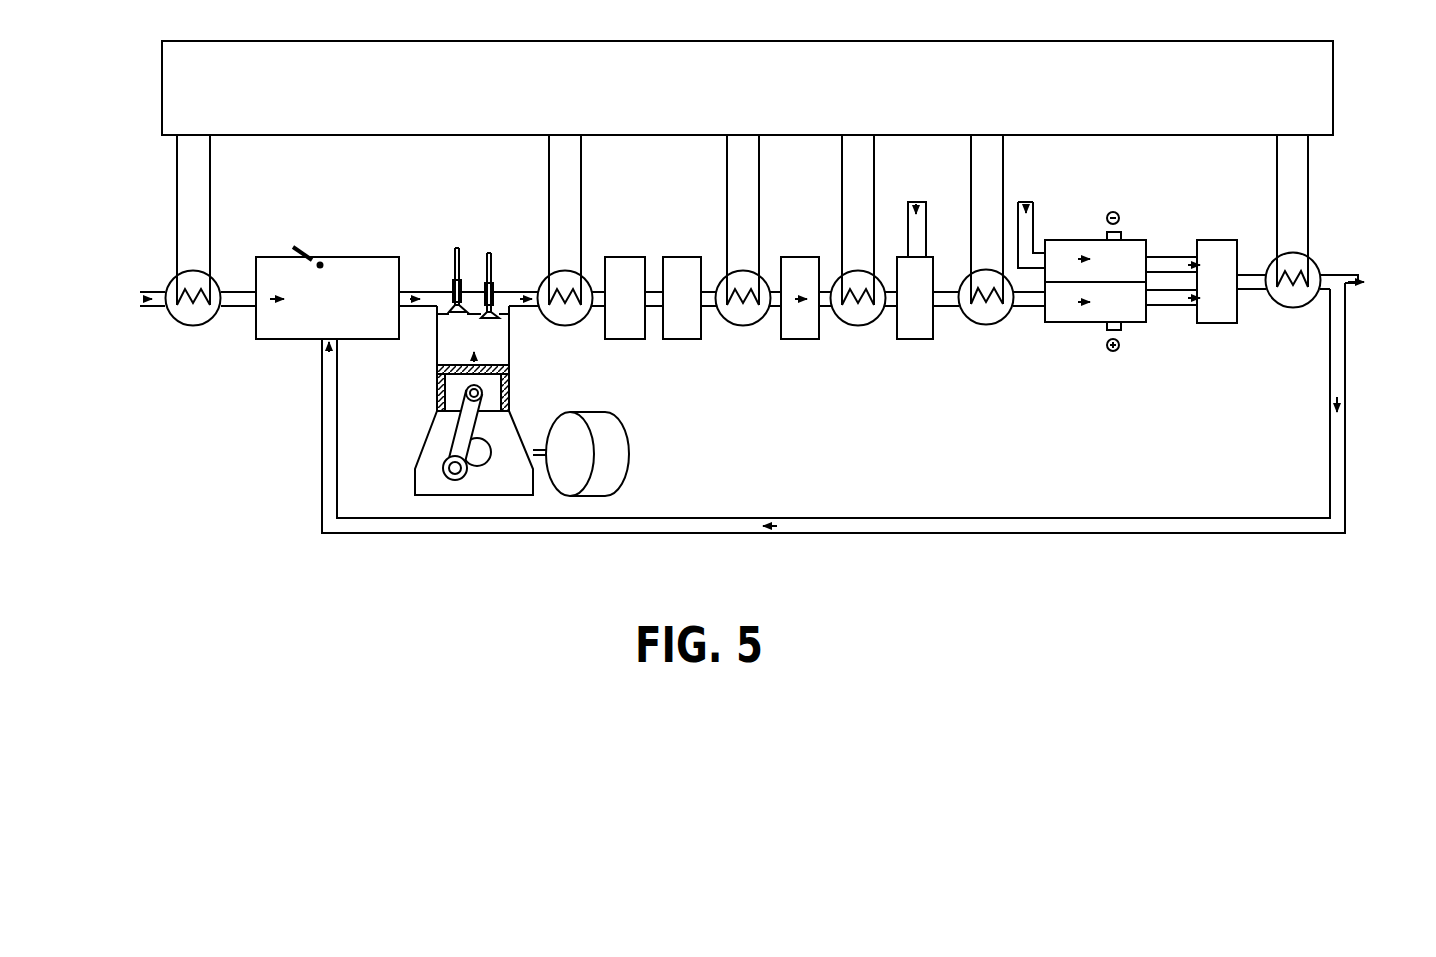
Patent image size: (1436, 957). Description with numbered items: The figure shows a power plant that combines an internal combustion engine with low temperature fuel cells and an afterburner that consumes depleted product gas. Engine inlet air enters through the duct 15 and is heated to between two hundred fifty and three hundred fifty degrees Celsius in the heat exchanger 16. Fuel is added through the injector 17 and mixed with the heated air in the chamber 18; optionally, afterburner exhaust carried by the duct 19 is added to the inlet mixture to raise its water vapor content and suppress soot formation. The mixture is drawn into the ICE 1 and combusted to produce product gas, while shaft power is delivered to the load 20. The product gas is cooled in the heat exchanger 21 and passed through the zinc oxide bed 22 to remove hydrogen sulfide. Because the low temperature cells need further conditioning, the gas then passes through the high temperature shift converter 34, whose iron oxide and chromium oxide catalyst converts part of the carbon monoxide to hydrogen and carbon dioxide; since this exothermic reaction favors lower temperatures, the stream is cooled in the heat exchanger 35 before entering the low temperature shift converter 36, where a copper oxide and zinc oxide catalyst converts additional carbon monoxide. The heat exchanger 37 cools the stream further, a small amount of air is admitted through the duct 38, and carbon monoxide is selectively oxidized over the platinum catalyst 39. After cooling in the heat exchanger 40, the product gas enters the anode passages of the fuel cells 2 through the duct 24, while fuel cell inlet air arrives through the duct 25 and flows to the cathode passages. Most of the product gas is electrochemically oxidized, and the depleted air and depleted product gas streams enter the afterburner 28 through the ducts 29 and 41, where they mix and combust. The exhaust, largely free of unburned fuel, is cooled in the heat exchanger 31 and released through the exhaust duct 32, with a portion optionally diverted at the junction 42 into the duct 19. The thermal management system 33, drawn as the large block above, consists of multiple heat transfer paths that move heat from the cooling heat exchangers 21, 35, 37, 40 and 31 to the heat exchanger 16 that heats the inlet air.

The ICE 1 is at (437, 374).
The fuel cells 2 is at (1090, 335).
The duct 15 is at (147, 308).
The heat exchanger 16 is at (195, 277).
The injector 17 is at (312, 248).
The chamber 18 is at (296, 330).
The duct 19 is at (915, 522).
The load 20 is at (604, 428).
The heat exchanger 21 is at (575, 270).
The zinc oxide bed 22 is at (608, 257).
The duct 24 is at (1038, 306).
The duct 25 is at (1028, 200).
The afterburner 28 is at (1217, 240).
The duct 29 is at (1167, 253).
The heat exchanger 31 is at (1296, 262).
The exhaust duct 32 is at (1360, 296).
The thermal management system 33 is at (683, 64).
The high temperature shift converter 34 is at (680, 340).
The heat exchanger 35 is at (743, 281).
The low temperature shift converter 36 is at (786, 340).
The heat exchanger 37 is at (858, 320).
The duct 38 is at (916, 203).
The platinum catalyst 39 is at (907, 340).
The heat exchanger 40 is at (983, 318).
The duct 41 is at (1162, 305).
The junction 42 is at (1345, 283).